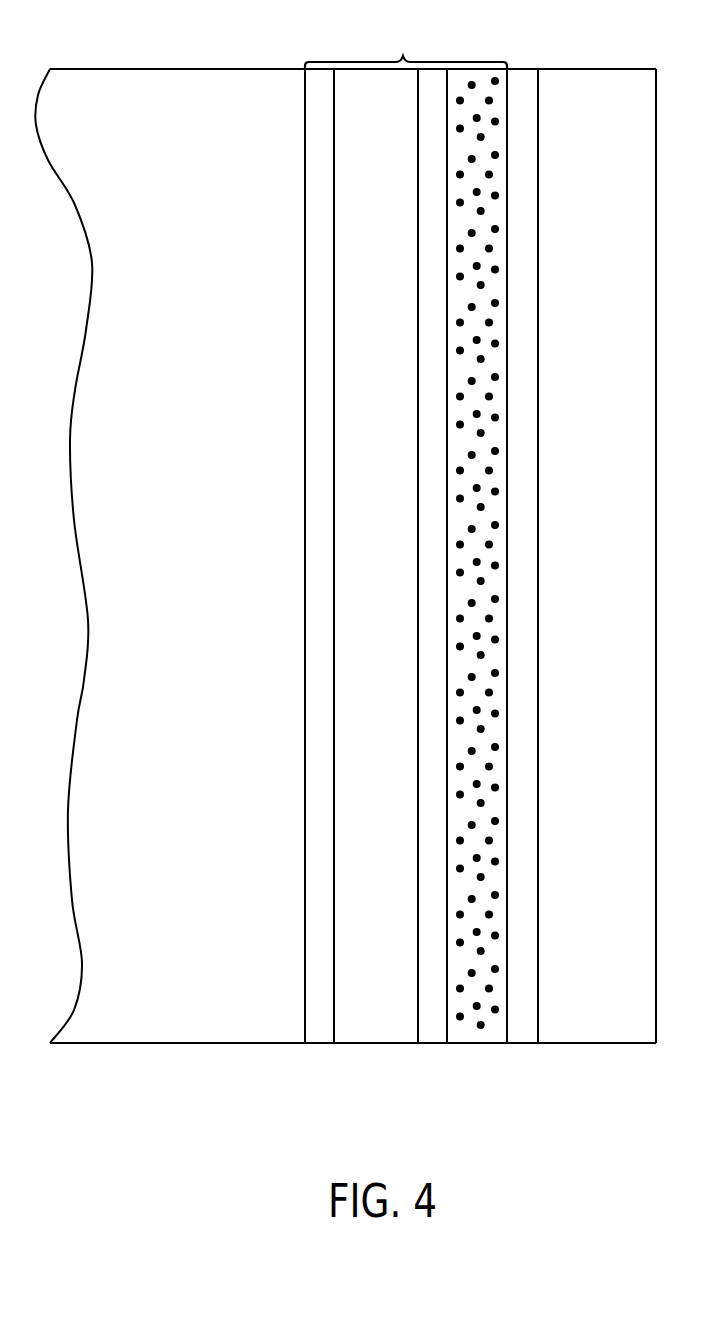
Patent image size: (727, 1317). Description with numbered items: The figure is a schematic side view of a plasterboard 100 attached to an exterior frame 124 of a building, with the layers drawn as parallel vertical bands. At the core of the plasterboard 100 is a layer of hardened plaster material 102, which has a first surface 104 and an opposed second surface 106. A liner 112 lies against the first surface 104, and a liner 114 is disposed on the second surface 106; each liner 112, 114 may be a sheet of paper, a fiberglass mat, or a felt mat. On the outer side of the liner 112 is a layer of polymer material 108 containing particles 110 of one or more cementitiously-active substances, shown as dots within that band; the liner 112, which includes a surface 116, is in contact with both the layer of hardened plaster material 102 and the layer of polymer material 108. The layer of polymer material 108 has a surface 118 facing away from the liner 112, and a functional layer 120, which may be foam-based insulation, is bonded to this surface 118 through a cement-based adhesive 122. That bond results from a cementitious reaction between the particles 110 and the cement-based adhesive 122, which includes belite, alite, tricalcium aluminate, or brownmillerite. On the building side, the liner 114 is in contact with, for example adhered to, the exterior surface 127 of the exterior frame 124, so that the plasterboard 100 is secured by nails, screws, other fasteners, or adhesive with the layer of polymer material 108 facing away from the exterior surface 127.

The plasterboard 100 is at (406, 46).
The layer of hardened plaster material 102 is at (343, 1035).
The first surface 104 is at (417, 870).
The second surface 106 is at (335, 837).
The layer of polymer material 108 is at (450, 1037).
The particles of one or more cementitiously-active substances 110 is at (500, 268).
The liner 112 is at (427, 1025).
The liner 114 is at (316, 1037).
The surface 116 is at (447, 472).
The surface 118 is at (507, 82).
The functional layer 120 is at (614, 974).
The cement-based adhesive 122 is at (522, 1035).
The exterior frame 124 is at (201, 960).
The exterior surface 127 is at (305, 707).